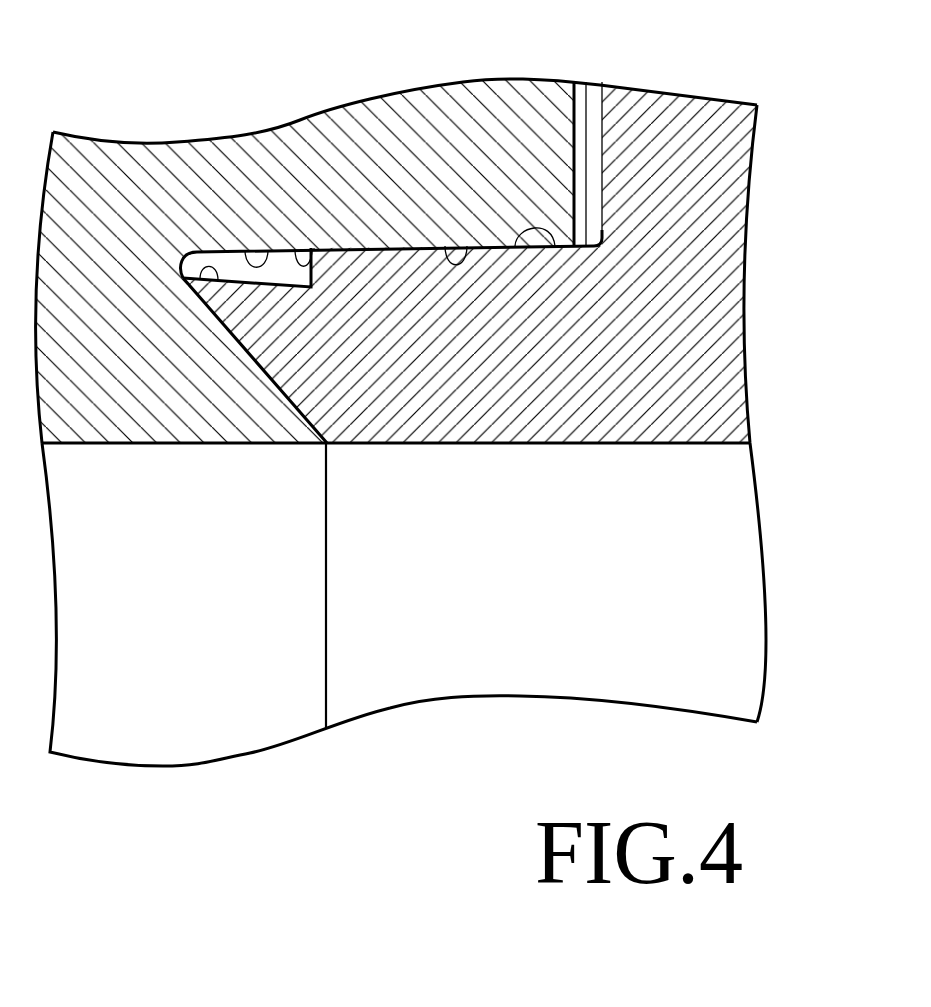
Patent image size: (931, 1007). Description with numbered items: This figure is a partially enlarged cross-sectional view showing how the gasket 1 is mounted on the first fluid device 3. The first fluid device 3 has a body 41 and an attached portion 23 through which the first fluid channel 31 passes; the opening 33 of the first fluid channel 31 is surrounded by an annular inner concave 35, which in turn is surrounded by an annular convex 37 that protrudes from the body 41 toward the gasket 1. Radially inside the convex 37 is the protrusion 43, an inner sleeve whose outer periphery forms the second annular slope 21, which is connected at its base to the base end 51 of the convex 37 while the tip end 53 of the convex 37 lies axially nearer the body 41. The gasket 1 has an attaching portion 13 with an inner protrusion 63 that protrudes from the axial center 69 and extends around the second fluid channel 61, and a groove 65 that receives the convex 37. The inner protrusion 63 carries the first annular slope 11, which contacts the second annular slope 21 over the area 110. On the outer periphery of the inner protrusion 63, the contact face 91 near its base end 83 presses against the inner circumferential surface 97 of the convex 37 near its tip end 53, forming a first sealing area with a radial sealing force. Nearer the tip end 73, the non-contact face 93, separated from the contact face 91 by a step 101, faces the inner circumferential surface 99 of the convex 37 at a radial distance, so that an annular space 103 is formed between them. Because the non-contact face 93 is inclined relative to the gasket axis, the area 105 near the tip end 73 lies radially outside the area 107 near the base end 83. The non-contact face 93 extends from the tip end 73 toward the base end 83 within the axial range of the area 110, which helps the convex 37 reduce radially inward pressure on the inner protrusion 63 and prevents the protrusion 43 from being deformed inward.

The gasket 1 is at (721, 380).
The first fluid device 3 is at (102, 343).
The first annular slope 11 is at (285, 397).
The attaching portion 13 is at (444, 674).
The second annular slope 21 is at (277, 381).
The attached portion 23 is at (153, 736).
The first fluid channel 31 is at (175, 686).
The opening 33 is at (327, 617).
The inner concave 35 is at (176, 258).
The convex 37 is at (578, 177).
The body 41 is at (92, 433).
The protrusion 43 is at (293, 445).
The base end 51 is at (178, 175).
The tip end 53 is at (578, 211).
The second fluid channel 61 is at (578, 631).
The inner protrusion 63 is at (471, 449).
The groove 65 is at (593, 106).
The axial center 69 is at (708, 138).
The tip end 73 is at (181, 278).
The base end 83 is at (600, 405).
The contact face 91 is at (555, 246).
The non-contact face 93 is at (200, 279).
The inner circumferential surface 97 is at (445, 247).
The inner circumferential surface 99 is at (268, 250).
The step 101 is at (296, 252).
The annular space 103 is at (233, 266).
The area 105 is at (198, 252).
The area 107 is at (298, 284).
The area 110 is at (244, 337).